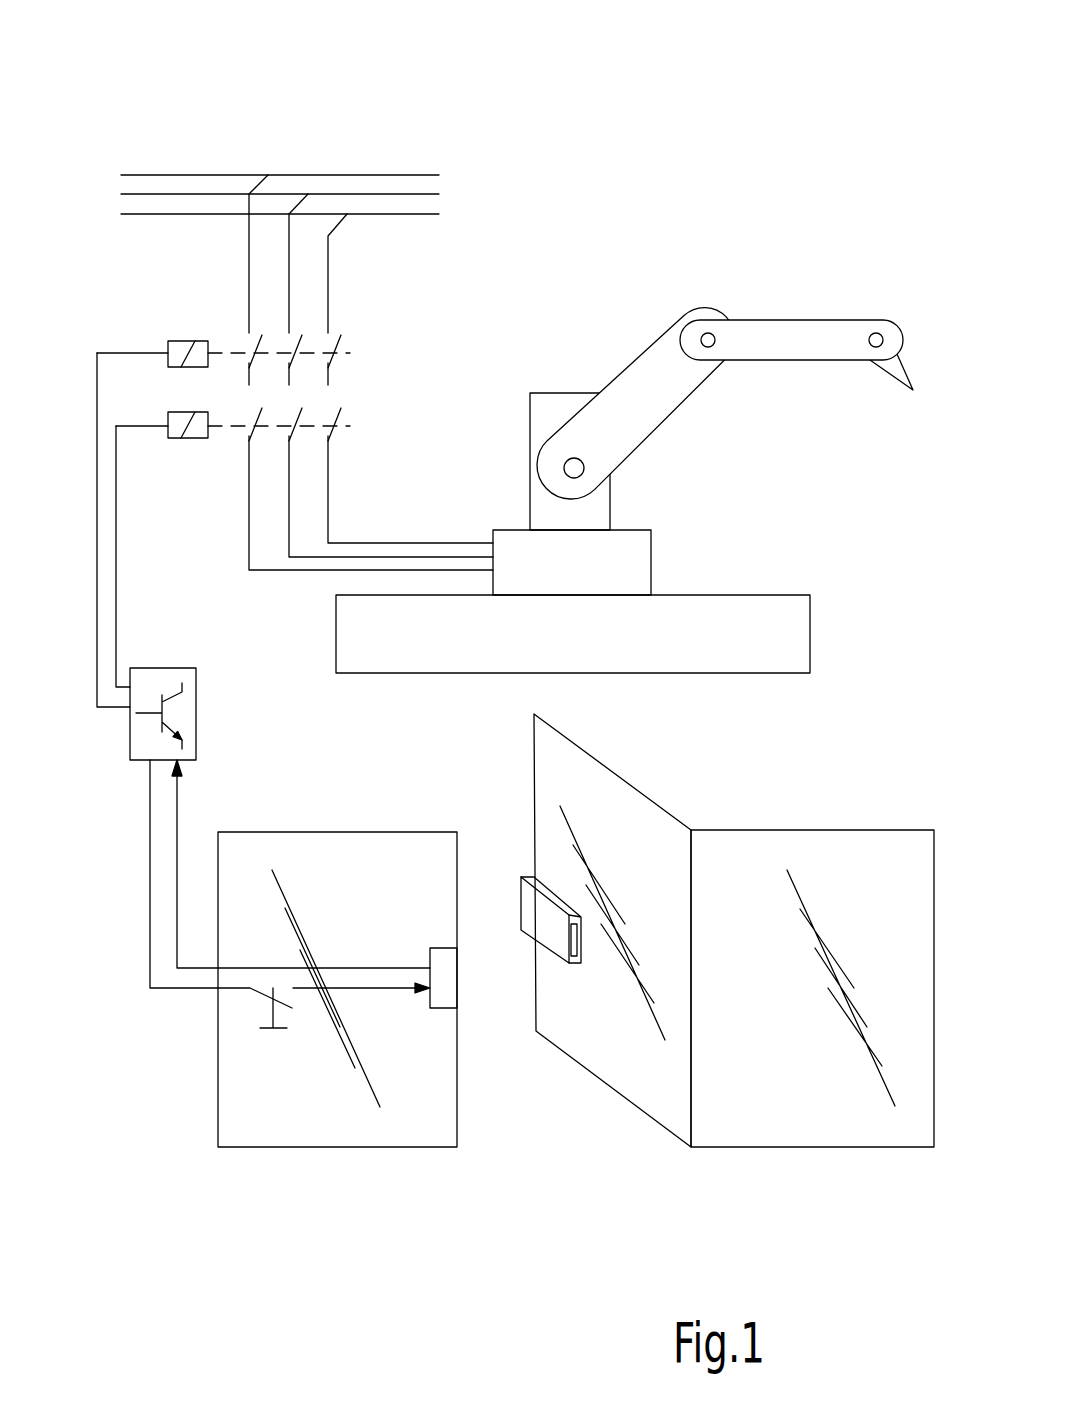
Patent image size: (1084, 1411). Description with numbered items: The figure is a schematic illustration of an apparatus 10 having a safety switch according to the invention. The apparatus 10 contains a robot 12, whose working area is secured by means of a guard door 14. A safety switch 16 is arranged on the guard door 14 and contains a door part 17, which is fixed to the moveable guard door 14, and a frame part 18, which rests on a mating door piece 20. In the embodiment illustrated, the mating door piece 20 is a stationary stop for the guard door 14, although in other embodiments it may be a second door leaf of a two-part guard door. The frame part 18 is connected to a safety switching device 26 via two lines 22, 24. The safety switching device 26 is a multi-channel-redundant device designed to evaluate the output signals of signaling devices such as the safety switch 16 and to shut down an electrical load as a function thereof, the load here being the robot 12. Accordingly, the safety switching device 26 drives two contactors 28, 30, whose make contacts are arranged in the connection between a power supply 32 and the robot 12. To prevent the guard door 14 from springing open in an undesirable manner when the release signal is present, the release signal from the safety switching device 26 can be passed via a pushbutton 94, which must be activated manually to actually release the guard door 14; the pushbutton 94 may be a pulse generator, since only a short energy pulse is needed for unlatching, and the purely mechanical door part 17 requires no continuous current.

The apparatus 10 is at (687, 185).
The robot 12 is at (793, 318).
The guard door 14 is at (633, 785).
The safety switch 16 is at (493, 860).
The door part 17 is at (549, 924).
The frame part 18 is at (440, 948).
The mating door piece 20 is at (465, 1018).
The line 22 is at (150, 952).
The line 24 is at (178, 807).
The safety switching device 26 is at (130, 737).
The contactor 28 is at (181, 340).
The contactor 30 is at (188, 438).
The power supply 32 is at (412, 166).
The pushbutton 94 is at (267, 998).